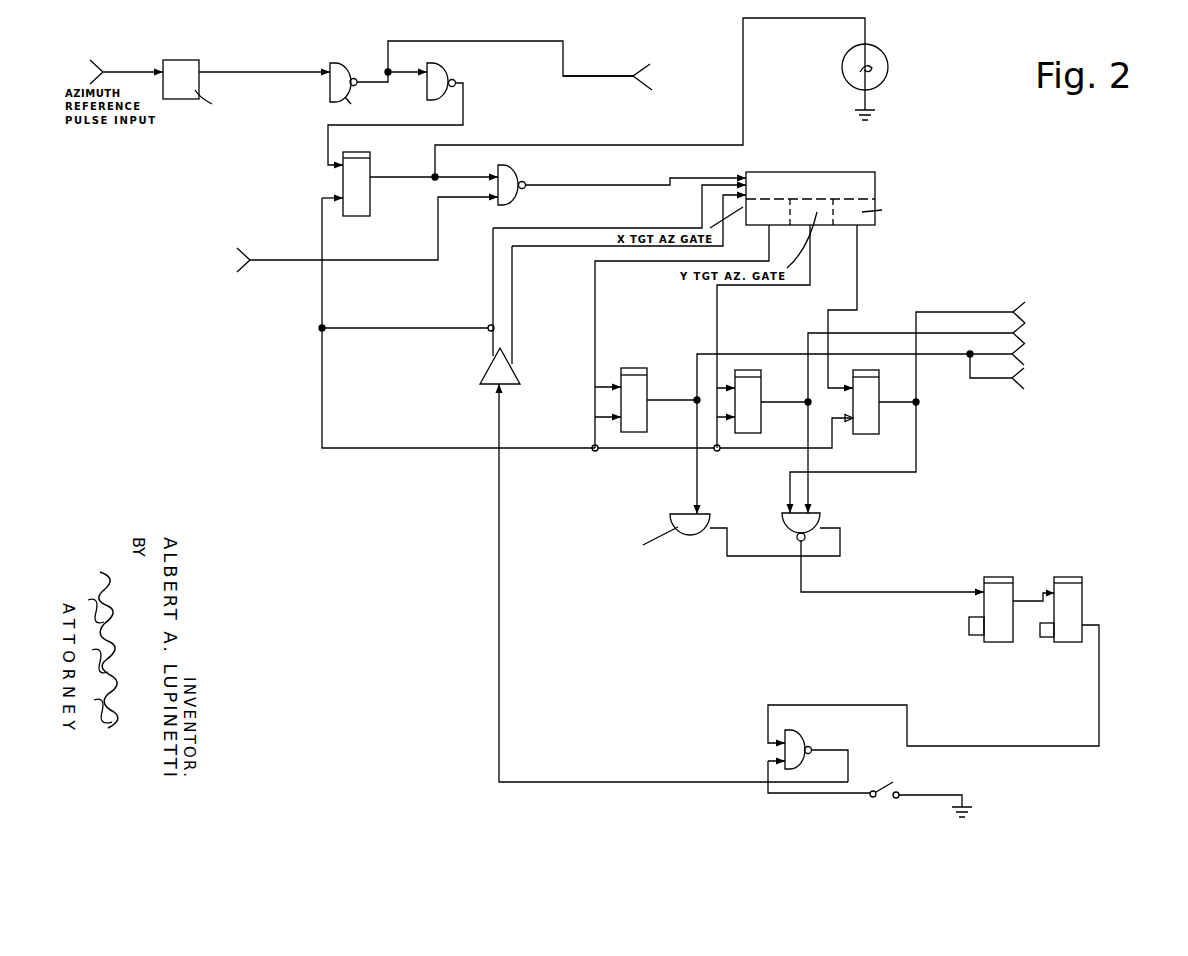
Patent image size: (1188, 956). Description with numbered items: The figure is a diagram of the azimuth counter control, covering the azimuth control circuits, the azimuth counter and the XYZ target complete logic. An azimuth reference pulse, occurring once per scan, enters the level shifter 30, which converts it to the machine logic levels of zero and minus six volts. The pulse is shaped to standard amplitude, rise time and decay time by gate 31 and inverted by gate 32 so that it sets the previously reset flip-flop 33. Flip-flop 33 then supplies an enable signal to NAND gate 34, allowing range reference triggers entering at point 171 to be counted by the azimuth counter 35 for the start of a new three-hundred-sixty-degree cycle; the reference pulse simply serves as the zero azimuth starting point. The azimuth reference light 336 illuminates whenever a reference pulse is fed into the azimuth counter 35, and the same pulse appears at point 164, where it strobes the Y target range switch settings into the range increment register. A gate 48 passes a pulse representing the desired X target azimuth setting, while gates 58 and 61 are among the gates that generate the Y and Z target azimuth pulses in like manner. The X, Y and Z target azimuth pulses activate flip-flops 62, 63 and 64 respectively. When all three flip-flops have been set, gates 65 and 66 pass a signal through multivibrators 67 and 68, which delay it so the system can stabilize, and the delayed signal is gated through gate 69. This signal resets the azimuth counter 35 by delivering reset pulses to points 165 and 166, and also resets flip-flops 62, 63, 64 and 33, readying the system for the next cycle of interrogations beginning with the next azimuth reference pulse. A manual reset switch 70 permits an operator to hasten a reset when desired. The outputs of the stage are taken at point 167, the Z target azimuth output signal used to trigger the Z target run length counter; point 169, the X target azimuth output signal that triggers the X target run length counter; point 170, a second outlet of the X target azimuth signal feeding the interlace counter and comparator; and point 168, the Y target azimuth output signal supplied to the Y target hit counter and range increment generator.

The level shifter 30 is at (184, 64).
The gate 31 is at (343, 66).
The gate 32 is at (443, 77).
The flip-flop 33 is at (368, 159).
The NAND gate 34 is at (512, 180).
The azimuth counter 35 is at (812, 181).
The X target azimuth gate stage 48 is at (748, 222).
The gate 58 is at (813, 210).
The gate 61 is at (856, 217).
The flip-flop 62 is at (637, 370).
The flip-flop 63 is at (775, 343).
The flip-flop 64 is at (872, 389).
The gate 65 is at (683, 517).
The gate 66 is at (810, 519).
The multivibrator 67 is at (1003, 578).
The multivibrator 68 is at (1073, 580).
The gate 69 is at (800, 743).
The manual reset switch 70 is at (880, 791).
The point 164 is at (617, 75).
The point 165 is at (746, 195).
The point 166 is at (736, 177).
The point 167 is at (996, 311).
The point 168 is at (1004, 332).
The point 169 is at (1004, 353).
The point 170 is at (1009, 367).
The point 171 is at (300, 238).
The azimuth reference light 336 is at (868, 62).